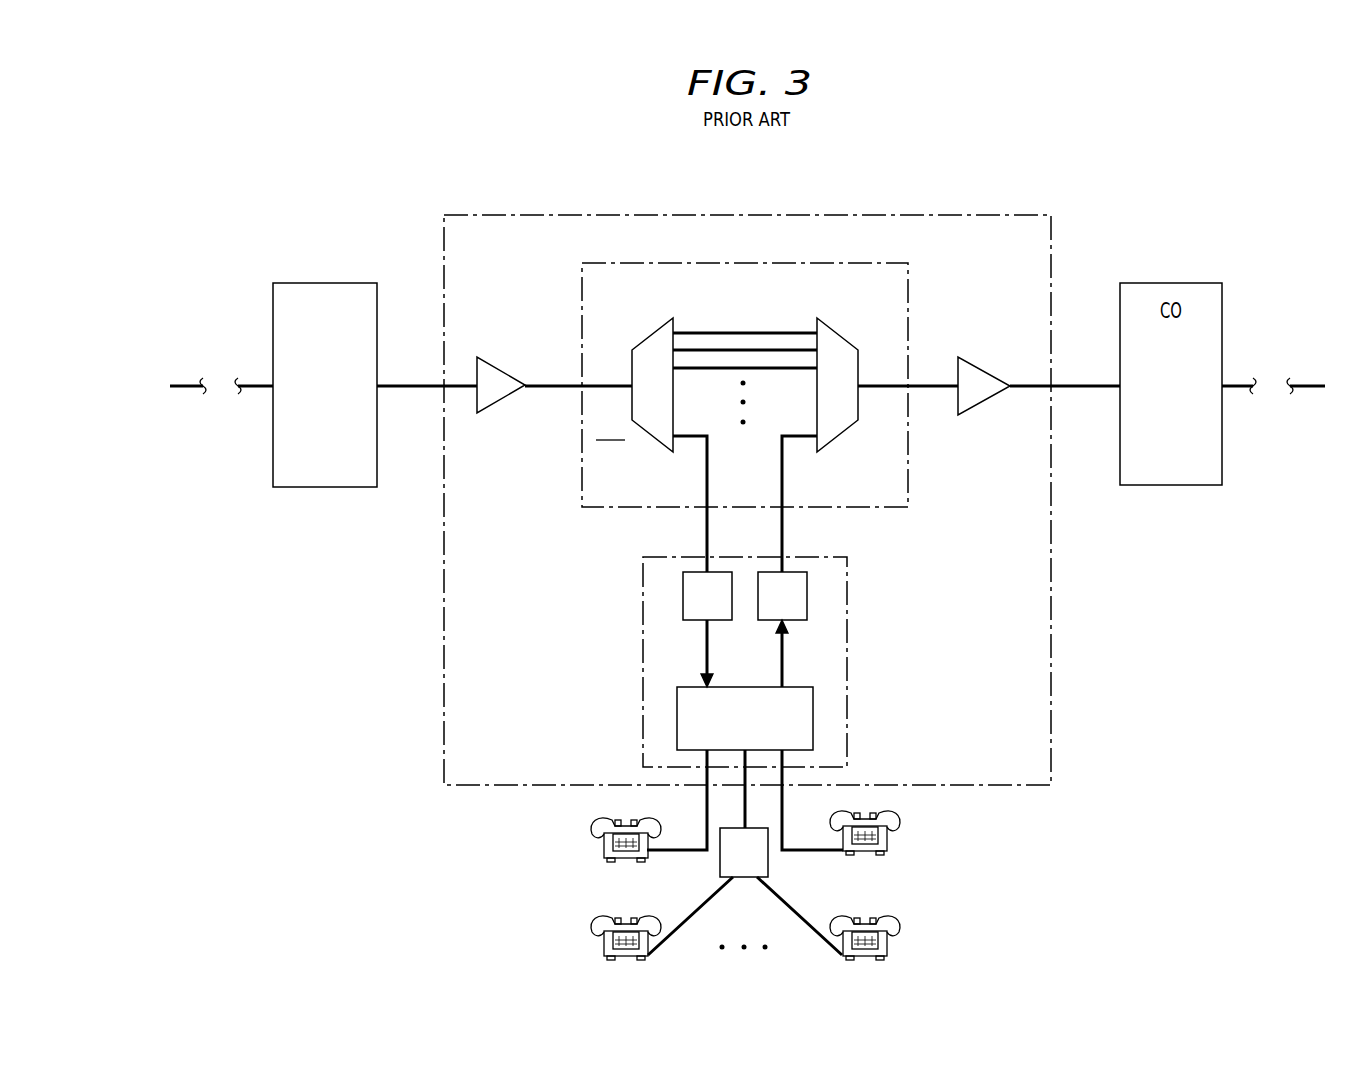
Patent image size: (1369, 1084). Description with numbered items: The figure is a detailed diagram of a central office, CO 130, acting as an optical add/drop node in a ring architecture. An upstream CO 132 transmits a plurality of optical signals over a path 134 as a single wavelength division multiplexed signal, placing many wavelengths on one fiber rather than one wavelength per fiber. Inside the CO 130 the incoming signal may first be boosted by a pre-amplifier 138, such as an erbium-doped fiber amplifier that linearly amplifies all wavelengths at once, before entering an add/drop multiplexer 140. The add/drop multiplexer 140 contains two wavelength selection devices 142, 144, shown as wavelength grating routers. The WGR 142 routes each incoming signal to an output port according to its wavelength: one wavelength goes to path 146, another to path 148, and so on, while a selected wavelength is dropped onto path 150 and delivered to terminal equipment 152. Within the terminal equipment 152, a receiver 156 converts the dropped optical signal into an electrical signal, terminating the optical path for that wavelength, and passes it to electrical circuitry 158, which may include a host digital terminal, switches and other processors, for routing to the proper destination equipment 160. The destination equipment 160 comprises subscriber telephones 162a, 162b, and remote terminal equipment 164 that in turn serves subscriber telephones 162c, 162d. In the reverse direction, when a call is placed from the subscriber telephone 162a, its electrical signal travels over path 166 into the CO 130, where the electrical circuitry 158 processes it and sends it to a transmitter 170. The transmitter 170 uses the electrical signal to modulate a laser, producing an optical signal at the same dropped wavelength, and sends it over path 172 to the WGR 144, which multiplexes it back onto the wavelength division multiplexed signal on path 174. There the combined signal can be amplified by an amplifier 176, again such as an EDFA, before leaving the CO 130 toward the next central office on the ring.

The CO 130 is at (782, 215).
The CO 132 is at (330, 283).
The path 134 is at (404, 385).
The pre-amplifier 138 is at (513, 373).
The add/drop multiplexer 140 is at (908, 289).
The wavelength selection device 142 is at (652, 330).
The wavelength selection device 144 is at (837, 330).
The path 146 is at (742, 333).
The path 148 is at (702, 354).
The path 150 is at (707, 533).
The terminal equipment 152 is at (847, 696).
The receiver 156 is at (683, 596).
The electrical circuitry 158 is at (677, 718).
The destination equipment 160 is at (670, 888).
The subscriber telephone 162a is at (591, 833).
The subscriber telephone 162b is at (900, 833).
The subscriber telephone 162c is at (591, 929).
The subscriber telephone 162d is at (900, 929).
The remote terminal equipment 164 is at (744, 878).
The path 166 is at (707, 811).
The transmitter 170 is at (807, 596).
The path 172 is at (781, 533).
The path 174 is at (933, 388).
The amplifier 176 is at (993, 372).